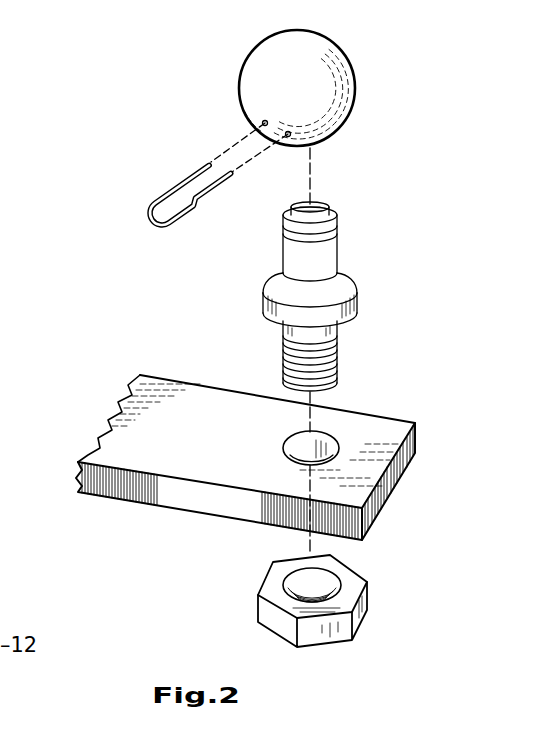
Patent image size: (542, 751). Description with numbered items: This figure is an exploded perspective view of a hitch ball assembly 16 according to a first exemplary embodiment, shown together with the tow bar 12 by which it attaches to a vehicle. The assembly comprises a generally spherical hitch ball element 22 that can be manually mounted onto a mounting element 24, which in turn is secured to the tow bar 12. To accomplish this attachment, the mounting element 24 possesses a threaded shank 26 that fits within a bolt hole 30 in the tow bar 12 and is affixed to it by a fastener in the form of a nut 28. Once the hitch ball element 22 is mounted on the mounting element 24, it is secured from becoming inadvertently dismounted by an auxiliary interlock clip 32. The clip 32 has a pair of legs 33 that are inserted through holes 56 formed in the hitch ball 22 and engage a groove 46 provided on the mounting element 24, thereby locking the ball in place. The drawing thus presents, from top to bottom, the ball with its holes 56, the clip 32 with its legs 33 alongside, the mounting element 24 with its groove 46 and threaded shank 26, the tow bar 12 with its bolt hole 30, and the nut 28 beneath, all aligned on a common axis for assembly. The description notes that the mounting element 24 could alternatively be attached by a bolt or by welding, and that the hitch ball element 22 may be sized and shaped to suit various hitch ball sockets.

The tow bar 12 is at (227, 457).
The hitch ball assembly 16 is at (126, 259).
The hitch ball element 22 is at (253, 101).
The mounting element 24 is at (271, 296).
The threaded shank 26 is at (337, 360).
The nut 28 is at (238, 604).
The bolt hole 30 is at (327, 424).
The auxiliary interlock clip 32 is at (149, 201).
The legs 33 is at (187, 175).
The groove 46 is at (338, 254).
The holes 56 is at (262, 124).